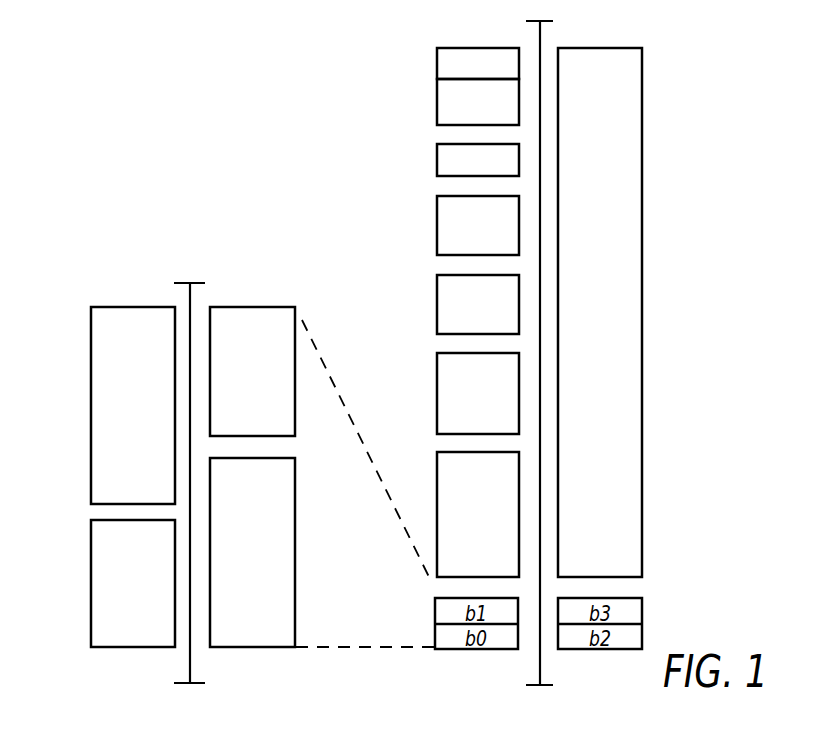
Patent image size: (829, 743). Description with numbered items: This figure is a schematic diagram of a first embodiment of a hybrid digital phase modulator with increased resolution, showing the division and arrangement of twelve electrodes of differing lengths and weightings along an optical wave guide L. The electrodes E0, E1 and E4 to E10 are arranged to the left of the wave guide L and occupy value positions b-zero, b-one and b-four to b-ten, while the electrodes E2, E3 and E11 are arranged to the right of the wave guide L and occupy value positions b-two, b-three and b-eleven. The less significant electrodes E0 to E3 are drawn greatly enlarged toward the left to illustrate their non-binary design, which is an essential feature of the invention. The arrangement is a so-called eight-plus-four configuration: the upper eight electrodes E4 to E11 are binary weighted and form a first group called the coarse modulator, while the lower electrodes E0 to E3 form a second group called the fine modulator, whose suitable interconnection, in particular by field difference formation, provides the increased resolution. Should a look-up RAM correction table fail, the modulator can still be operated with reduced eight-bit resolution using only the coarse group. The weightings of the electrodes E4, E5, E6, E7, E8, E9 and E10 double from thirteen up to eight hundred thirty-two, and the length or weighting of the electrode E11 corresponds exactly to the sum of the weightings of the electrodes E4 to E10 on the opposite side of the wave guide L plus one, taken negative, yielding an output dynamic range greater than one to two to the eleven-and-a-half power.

The electrode E0 is at (91, 571).
The electrode E1 is at (91, 396).
The electrode E2 is at (295, 578).
The electrode E3 is at (295, 433).
The electrode E4 is at (437, 58).
The electrode E5 is at (437, 110).
The electrode E6 is at (437, 160).
The electrode E7 is at (437, 225).
The electrode E8 is at (437, 303).
The electrode E9 is at (437, 393).
The electrode E10 is at (437, 467).
The electrode E11 is at (642, 288).
The optical wave guide L is at (540, 655).